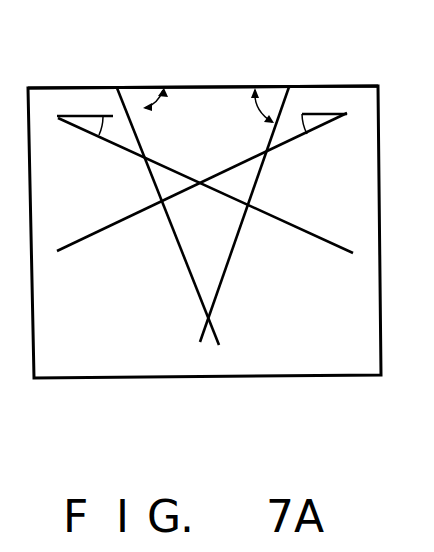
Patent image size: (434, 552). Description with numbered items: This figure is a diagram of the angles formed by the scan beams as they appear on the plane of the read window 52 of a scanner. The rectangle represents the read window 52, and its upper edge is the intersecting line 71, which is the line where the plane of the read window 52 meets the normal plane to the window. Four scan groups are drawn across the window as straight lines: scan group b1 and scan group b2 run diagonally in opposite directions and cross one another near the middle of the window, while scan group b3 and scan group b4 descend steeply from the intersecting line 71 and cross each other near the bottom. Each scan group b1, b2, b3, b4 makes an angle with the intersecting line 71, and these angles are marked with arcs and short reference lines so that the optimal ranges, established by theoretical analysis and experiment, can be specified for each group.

The read window 52 is at (107, 353).
The intersecting line 71 is at (320, 85).
The scan group b1 is at (336, 250).
The scan group b2 is at (83, 239).
The scan group b3 is at (218, 293).
The scan group b4 is at (177, 252).